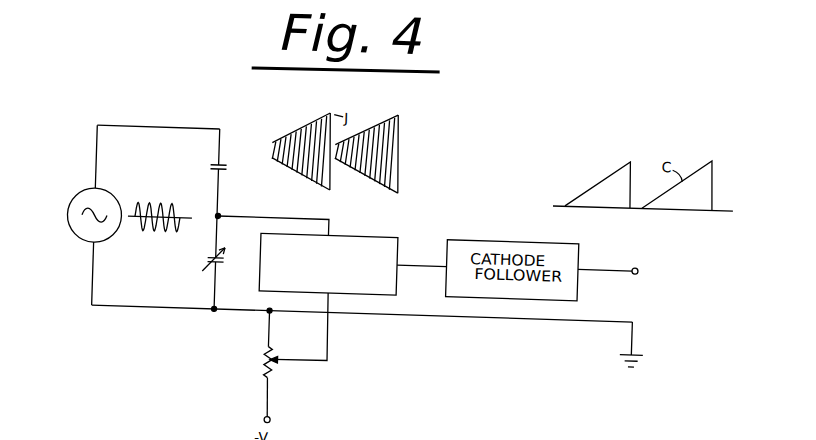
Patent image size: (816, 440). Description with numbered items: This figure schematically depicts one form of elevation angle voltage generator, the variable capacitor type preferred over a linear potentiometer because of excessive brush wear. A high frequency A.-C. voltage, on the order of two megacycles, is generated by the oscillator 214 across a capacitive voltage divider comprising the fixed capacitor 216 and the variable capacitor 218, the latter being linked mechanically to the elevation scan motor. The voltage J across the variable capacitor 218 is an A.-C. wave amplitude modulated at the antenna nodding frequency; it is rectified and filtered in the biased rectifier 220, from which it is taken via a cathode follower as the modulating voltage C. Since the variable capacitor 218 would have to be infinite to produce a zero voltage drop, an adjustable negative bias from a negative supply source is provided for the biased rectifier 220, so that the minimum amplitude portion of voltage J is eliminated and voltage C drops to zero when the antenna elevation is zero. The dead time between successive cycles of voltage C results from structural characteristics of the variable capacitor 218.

The oscillator 214 is at (88, 192).
The fixed capacitor 216 is at (212, 167).
The variable capacitor 218 is at (208, 260).
The biased rectifier 220 is at (397, 287).